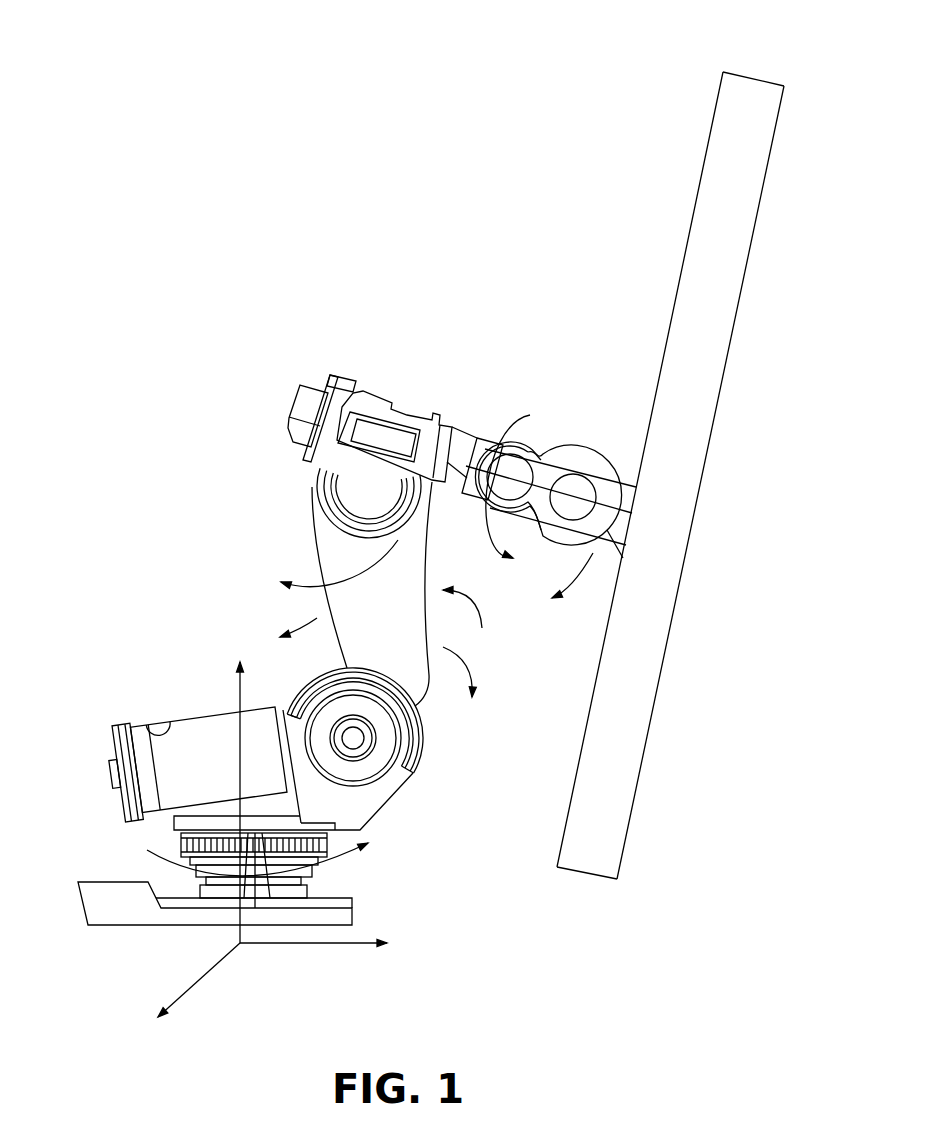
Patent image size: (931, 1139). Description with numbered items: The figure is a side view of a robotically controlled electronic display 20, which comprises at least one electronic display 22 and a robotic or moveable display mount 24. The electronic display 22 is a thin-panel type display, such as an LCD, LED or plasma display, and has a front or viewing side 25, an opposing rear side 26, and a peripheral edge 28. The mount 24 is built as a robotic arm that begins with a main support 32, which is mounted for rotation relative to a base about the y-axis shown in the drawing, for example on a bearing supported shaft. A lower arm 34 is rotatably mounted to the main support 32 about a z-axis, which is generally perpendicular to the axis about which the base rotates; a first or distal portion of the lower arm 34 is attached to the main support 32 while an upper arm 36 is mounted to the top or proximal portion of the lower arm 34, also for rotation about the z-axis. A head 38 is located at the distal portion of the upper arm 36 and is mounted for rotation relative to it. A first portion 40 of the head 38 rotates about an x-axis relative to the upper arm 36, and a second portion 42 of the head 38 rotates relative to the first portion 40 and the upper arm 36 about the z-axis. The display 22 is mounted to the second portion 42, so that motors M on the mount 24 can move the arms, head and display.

The robotically controlled electronic display 20 is at (400, 95).
The electronic display 22 is at (633, 160).
The robotic or moveable display mount 24 is at (200, 365).
The front or viewing side 25 is at (733, 395).
The rear side 26 is at (660, 285).
The peripheral edge 28 is at (736, 118).
The main support 32 is at (405, 802).
The lower arm 34 is at (403, 594).
The upper arm 36 is at (410, 390).
The head 38 is at (562, 375).
The first portion of the head 40 is at (488, 422).
The second portion of the head 42 is at (620, 460).